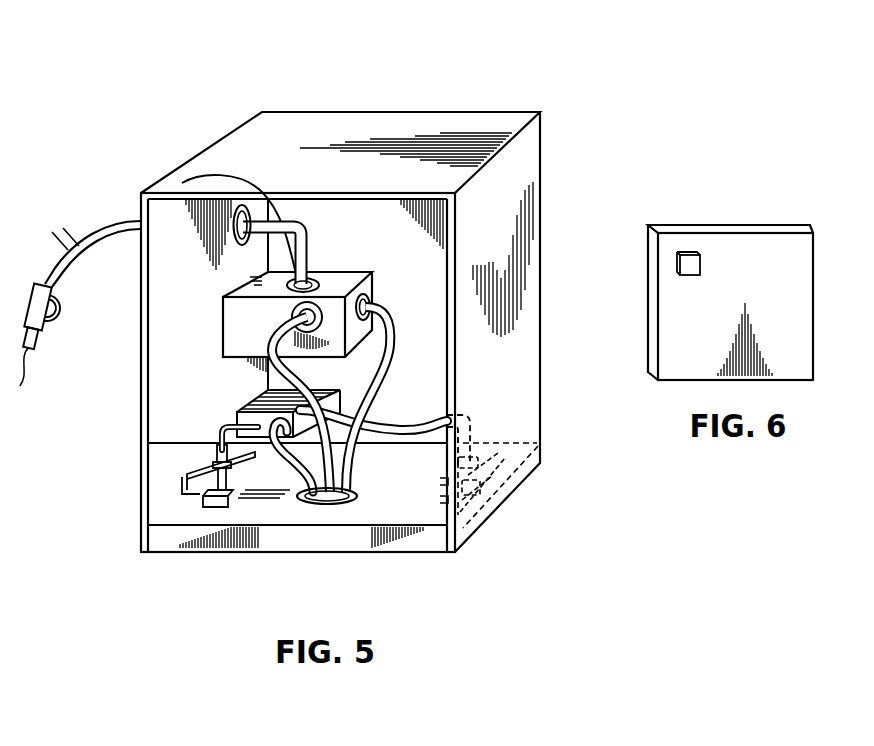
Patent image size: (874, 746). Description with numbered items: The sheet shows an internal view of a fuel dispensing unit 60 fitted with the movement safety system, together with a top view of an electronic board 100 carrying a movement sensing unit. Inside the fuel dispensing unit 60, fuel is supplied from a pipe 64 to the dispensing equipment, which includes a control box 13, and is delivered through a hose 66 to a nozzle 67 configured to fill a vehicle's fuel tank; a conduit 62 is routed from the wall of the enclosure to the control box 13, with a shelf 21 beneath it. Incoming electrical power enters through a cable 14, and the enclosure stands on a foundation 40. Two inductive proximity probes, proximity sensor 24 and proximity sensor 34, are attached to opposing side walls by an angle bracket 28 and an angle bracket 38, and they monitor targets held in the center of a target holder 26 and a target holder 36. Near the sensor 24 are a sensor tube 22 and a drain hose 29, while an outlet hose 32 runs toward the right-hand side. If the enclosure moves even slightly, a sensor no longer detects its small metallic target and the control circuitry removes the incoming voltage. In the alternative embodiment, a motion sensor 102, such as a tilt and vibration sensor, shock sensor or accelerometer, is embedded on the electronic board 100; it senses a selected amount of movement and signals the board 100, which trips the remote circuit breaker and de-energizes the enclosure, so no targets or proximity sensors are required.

In FIG. 5, the fuel dispensing unit 60 is at (218, 125).
In FIG. 5, the hose 66 is at (152, 186).
In FIG. 5, the nozzle 67 is at (37, 353).
In FIG. 5, the supply conduit 62 is at (262, 282).
In FIG. 5, the control box 13 is at (223, 346).
In FIG. 5, the pipe 64 is at (263, 372).
In FIG. 5, the cable 14 is at (390, 326).
In FIG. 5, the shelf 21 is at (300, 380).
In FIG. 5, the sensor tube 22 is at (235, 424).
In FIG. 5, the proximity sensor 24 is at (217, 452).
In FIG. 5, the angle bracket 28 is at (203, 467).
In FIG. 5, the target holder 26 is at (203, 500).
In FIG. 5, the drain hose 29 is at (290, 458).
In FIG. 5, the foundation 40 is at (335, 533).
In FIG. 5, the outlet hose 32 is at (405, 407).
In FIG. 5, the proximity sensor 34 is at (477, 433).
In FIG. 5, the angle bracket 38 is at (533, 470).
In FIG. 5, the target holder 36 is at (463, 528).
In FIG. 6, the electronic board 100 is at (772, 265).
In FIG. 6, the motion sensor 102 is at (682, 252).